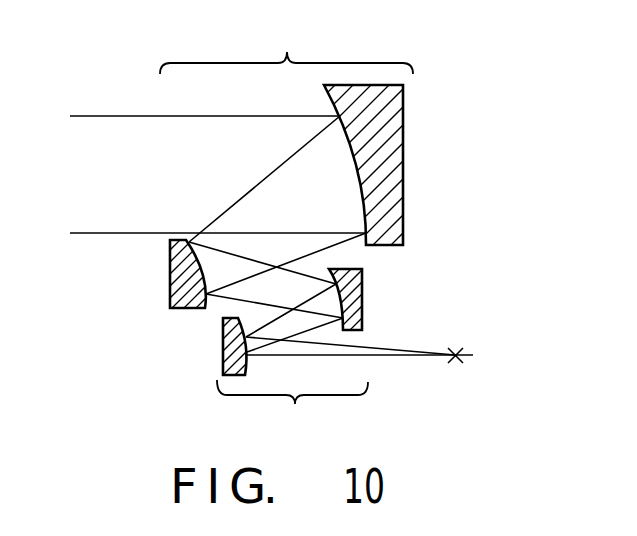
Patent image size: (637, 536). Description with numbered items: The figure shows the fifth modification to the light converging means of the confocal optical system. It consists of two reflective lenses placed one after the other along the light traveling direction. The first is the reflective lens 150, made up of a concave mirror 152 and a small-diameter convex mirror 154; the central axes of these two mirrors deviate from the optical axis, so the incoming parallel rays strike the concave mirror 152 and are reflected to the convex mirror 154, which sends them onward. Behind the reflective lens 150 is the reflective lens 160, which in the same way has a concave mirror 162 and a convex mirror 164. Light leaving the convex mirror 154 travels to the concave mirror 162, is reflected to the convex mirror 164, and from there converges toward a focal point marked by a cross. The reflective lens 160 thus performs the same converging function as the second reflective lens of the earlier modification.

The reflective lens 150 is at (286, 48).
The concave mirror 152 is at (403, 115).
The convex mirror 154 is at (170, 275).
The reflective lens 160 is at (292, 409).
The concave mirror 162 is at (362, 283).
The convex mirror 164 is at (223, 355).